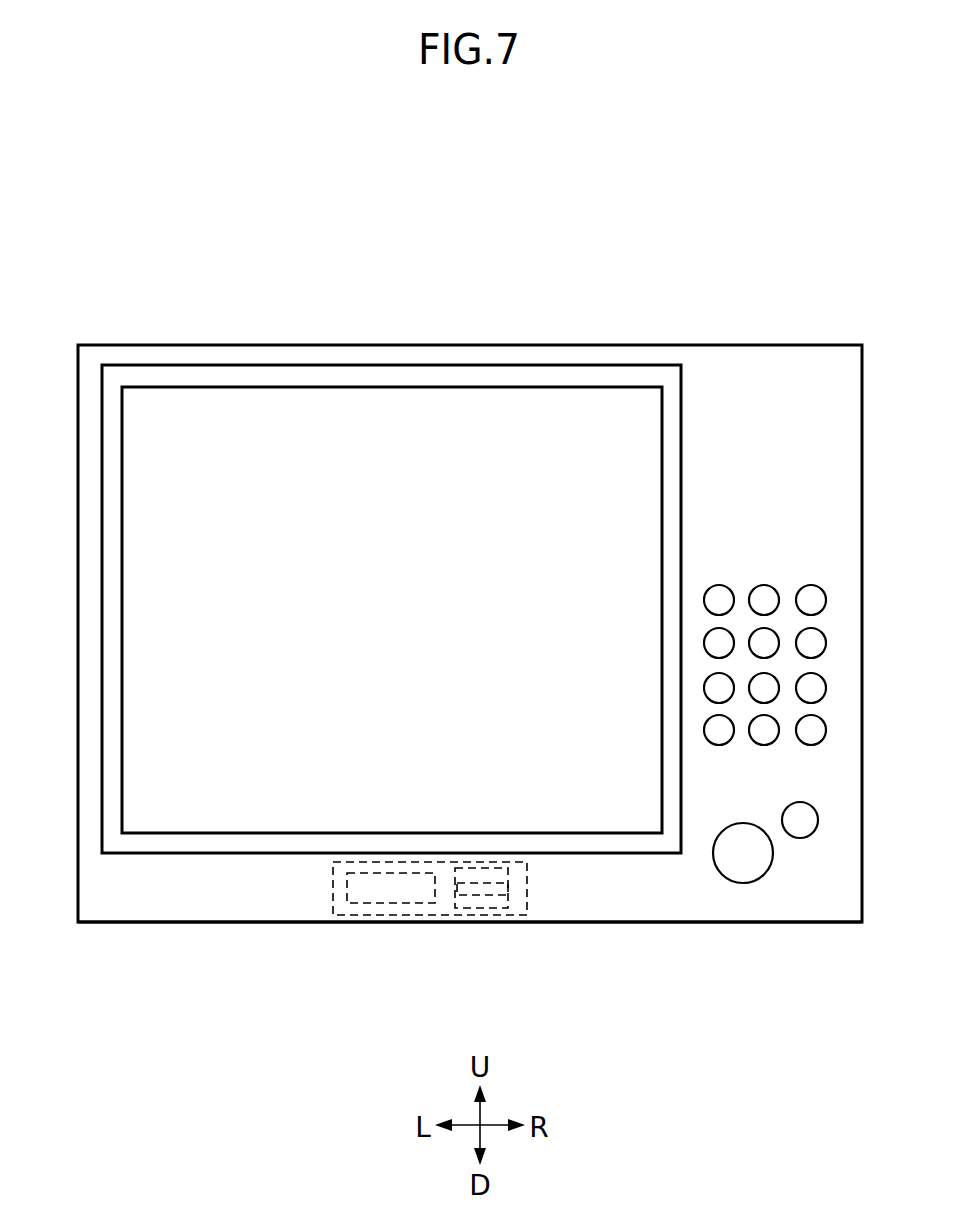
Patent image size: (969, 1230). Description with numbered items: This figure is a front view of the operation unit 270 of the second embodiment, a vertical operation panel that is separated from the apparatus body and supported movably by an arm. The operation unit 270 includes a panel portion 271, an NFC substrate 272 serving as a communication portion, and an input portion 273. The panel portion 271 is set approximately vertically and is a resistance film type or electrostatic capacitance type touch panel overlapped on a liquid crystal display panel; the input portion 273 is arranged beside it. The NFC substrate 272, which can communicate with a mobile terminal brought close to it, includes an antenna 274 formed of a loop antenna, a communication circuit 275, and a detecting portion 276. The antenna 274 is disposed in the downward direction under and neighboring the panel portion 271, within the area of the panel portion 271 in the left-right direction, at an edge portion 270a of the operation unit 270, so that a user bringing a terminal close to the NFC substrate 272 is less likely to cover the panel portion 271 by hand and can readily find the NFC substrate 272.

The operation unit 270 is at (685, 263).
The edge portion 270a is at (653, 923).
The panel portion 271 is at (407, 364).
The NFC substrate 272 is at (333, 897).
The input portion 273 is at (767, 551).
The antenna 274 is at (388, 904).
The communication circuit 275 is at (483, 909).
The detecting portion 276 is at (510, 877).